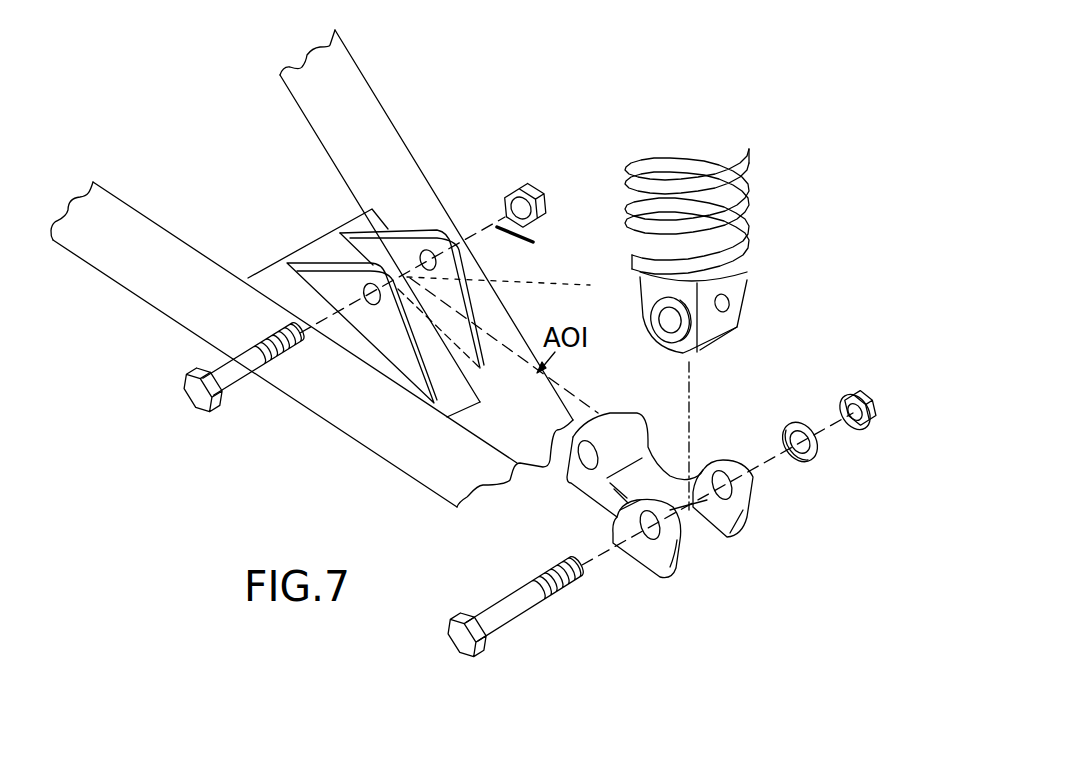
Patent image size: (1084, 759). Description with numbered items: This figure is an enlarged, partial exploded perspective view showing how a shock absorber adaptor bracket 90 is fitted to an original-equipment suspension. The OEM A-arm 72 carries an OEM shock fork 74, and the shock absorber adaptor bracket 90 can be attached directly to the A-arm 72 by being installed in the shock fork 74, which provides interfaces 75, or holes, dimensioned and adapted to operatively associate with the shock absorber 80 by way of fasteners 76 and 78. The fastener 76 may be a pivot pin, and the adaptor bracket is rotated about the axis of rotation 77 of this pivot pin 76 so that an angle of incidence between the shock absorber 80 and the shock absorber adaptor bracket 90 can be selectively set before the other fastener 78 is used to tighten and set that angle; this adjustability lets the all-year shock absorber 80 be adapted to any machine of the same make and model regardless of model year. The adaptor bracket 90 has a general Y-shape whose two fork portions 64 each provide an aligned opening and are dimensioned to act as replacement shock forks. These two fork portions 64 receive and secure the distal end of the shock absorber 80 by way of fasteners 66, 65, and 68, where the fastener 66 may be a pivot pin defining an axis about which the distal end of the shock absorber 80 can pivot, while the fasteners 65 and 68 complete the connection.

The fork portions 64 is at (748, 505).
The fastener 65 is at (817, 448).
The fastener 66 is at (498, 623).
The fastener 68 is at (877, 402).
The OEM A-arm 72 is at (160, 293).
The OEM shock fork 74 is at (317, 263).
The interfaces 75 is at (370, 303).
The fastener 76 is at (243, 378).
The axis of rotation 77 is at (535, 242).
The fastener 78 is at (528, 185).
The shock absorber 80 is at (738, 303).
The shock absorber adaptor bracket 90 is at (747, 602).